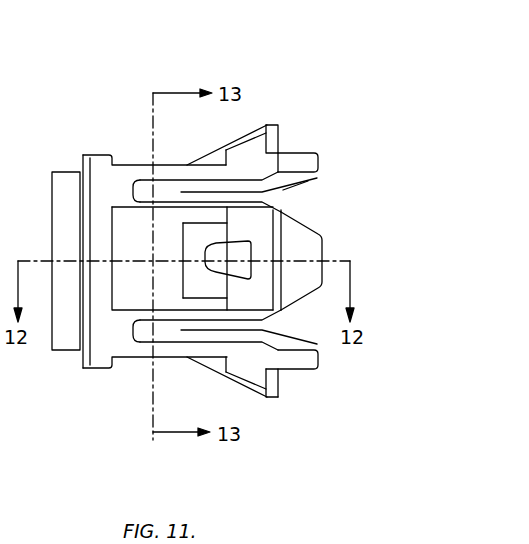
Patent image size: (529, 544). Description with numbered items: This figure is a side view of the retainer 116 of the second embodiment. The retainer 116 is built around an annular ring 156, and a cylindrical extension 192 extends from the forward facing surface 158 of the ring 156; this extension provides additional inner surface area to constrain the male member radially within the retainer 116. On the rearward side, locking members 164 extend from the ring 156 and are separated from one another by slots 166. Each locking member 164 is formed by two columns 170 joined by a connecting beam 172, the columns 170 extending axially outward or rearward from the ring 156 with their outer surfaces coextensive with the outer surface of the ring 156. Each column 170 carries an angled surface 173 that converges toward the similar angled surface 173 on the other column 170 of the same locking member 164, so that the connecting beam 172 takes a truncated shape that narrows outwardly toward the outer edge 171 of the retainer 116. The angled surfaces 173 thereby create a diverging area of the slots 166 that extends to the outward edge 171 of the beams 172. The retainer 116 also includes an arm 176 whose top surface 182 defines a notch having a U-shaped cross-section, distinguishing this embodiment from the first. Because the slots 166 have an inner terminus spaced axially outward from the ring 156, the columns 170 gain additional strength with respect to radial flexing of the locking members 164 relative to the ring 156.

The retainer 116 is at (293, 84).
The forward facing surface 158 is at (82, 166).
The ring 156 is at (102, 158).
The cylindrical extension 192 is at (63, 180).
The column 170 is at (165, 165).
The top surface 182 is at (250, 134).
The arm 176 is at (270, 122).
The connecting beam 172 is at (293, 158).
The slot 166 is at (325, 178).
The angled surface 173 is at (325, 178).
The outer edge 171 is at (322, 243).
The locking member 164 is at (306, 381).